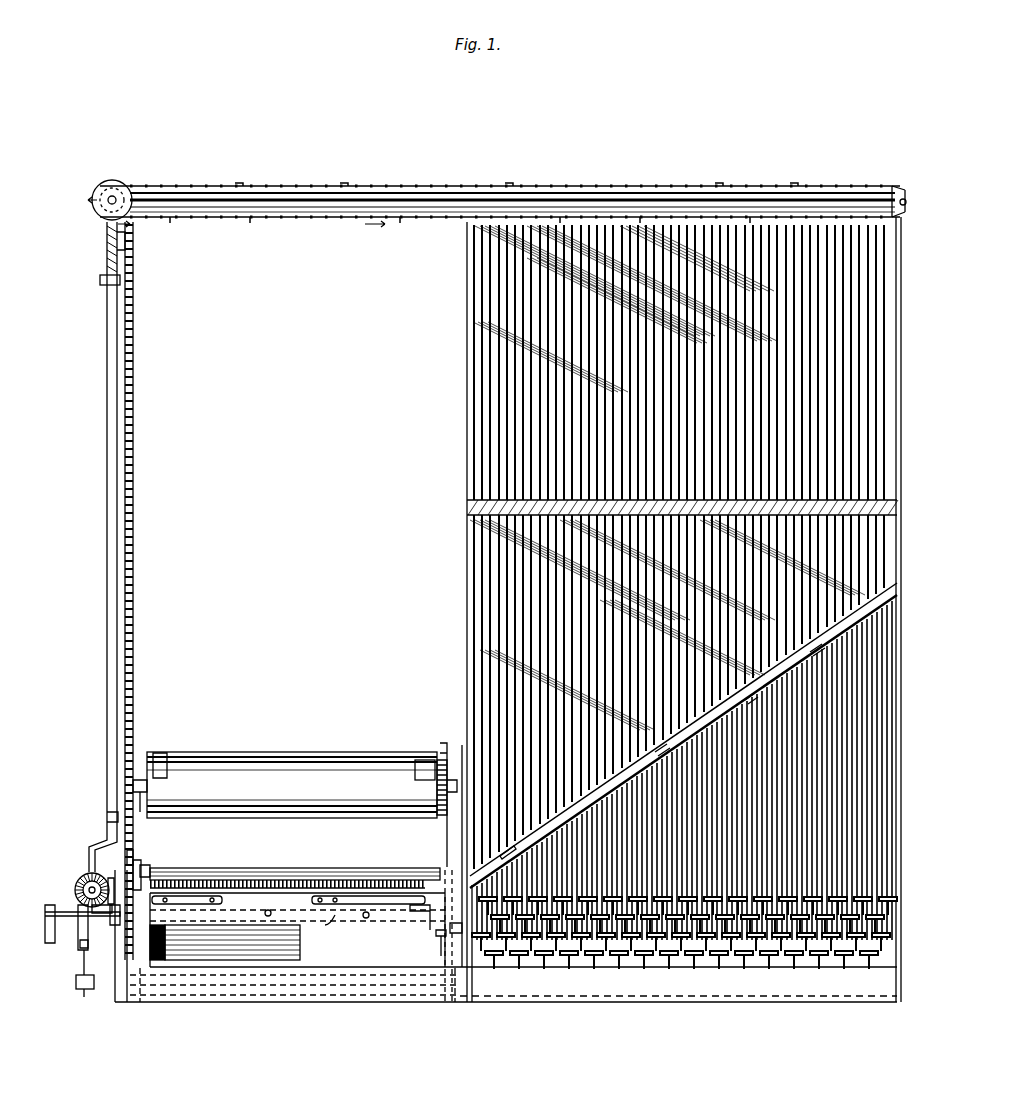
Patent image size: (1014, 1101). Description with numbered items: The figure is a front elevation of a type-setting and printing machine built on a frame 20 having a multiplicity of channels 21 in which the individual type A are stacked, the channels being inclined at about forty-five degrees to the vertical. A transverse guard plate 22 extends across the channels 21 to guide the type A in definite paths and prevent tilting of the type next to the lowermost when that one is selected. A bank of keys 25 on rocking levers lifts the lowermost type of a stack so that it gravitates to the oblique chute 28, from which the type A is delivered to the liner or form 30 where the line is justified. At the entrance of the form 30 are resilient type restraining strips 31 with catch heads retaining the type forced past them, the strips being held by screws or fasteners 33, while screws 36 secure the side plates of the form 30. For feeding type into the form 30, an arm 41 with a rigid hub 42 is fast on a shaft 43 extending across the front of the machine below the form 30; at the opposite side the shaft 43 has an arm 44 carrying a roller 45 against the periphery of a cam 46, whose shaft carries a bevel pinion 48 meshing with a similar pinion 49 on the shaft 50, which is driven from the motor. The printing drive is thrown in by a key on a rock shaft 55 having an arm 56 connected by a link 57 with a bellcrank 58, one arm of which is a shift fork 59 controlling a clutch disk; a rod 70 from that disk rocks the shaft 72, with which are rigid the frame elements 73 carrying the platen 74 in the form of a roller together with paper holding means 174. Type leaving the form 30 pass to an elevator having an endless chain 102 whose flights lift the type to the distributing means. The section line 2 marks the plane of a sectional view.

The section line 2- 2 is at (888, 186).
The endless chain 102 is at (134, 351).
The shaft 50 is at (88, 875).
The bevel pinion 49 is at (76, 887).
The rod 70 is at (50, 926).
The shift fork 59 is at (80, 960).
The arm 56 is at (78, 982).
The rock shaft 55 is at (100, 985).
The bellcrank 58 is at (95, 925).
The link 57 is at (90, 952).
The arm 44 is at (160, 920).
The platen 74 is at (292, 785).
The frame elements 73 is at (150, 775).
The paper holding means 174 is at (427, 760).
The shaft 72 is at (242, 878).
The roller 45 is at (185, 876).
The cam 46 is at (140, 878).
The bevel pinion 48 is at (138, 870).
The liner or form 30 is at (266, 912).
The screws 36 is at (271, 912).
The resilient type restraining strips 31 is at (400, 905).
The screws or fasteners 33 is at (348, 905).
The shaft 43 is at (320, 932).
The hub 42 is at (436, 918).
The arm 41 is at (440, 935).
The frame 20 is at (478, 1003).
The channels 21 is at (470, 418).
The transverse guard plate 22 is at (467, 508).
The oblique chute 28 is at (616, 790).
The type A is at (312, 878).
The bank of keys 25 is at (678, 798).